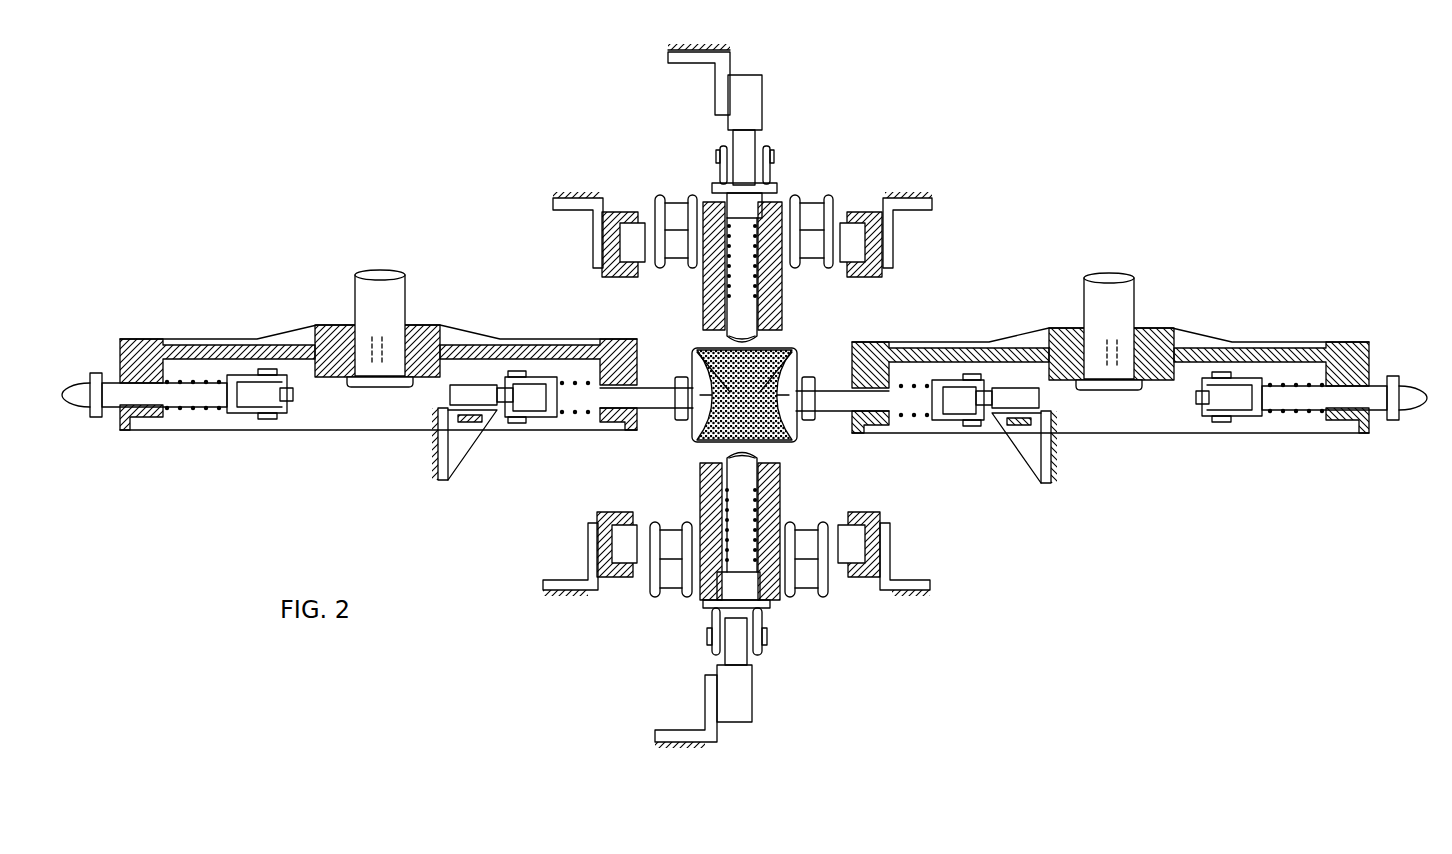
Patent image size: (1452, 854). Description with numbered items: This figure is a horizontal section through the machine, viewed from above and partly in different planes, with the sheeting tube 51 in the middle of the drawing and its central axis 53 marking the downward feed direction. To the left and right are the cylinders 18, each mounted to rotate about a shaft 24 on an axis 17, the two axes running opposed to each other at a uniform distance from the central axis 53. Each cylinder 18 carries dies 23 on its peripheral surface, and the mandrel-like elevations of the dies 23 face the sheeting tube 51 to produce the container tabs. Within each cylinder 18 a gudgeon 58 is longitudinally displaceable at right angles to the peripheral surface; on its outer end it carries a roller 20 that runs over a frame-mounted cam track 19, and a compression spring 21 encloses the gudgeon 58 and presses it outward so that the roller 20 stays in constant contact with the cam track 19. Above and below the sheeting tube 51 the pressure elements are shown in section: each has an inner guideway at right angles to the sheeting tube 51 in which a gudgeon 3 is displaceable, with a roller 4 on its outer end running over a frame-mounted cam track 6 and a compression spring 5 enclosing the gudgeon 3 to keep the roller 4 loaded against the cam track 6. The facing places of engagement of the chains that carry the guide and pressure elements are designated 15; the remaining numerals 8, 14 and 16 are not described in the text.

The gudgeon 3 is at (782, 301).
The roller 4 is at (757, 141).
The compression spring 5 is at (703, 291).
The cam track 6 is at (762, 96).
The flange 8 is at (712, 203).
The roller 14 is at (806, 537).
The places of engagement of the chains 15 is at (620, 212).
The roller 16 is at (812, 197).
The axis 17 is at (592, 236).
The cylinder 18 is at (158, 339).
The cam track 19 is at (488, 403).
The roller 20 is at (291, 416).
The compression spring 21 is at (200, 408).
The die 23 is at (82, 405).
The shaft 24 is at (365, 298).
The sheeting tube 51 is at (778, 350).
The central axis 53 is at (693, 352).
The gudgeon 58 is at (168, 410).